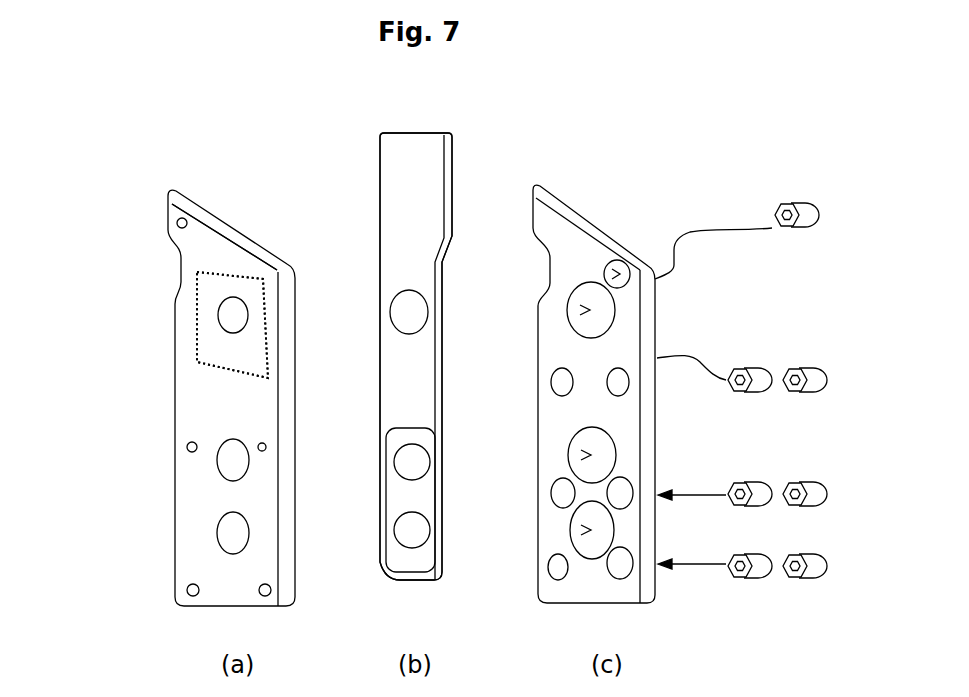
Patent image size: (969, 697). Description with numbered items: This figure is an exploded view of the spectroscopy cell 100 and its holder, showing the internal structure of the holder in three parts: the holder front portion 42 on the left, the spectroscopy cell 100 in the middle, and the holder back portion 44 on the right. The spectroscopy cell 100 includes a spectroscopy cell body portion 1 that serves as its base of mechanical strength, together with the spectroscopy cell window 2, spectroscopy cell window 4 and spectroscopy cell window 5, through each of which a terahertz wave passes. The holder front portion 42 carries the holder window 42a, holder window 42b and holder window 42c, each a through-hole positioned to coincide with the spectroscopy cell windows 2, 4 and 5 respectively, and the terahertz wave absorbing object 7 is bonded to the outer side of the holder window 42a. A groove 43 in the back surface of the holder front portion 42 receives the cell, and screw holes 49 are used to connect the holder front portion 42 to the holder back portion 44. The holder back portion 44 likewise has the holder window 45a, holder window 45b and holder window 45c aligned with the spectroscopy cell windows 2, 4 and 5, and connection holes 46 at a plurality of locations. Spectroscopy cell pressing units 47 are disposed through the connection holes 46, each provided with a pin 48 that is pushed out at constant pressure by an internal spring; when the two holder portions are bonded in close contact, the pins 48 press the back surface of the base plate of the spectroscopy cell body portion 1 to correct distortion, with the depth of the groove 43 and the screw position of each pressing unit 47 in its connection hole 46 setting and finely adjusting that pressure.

The spectroscopy cell 100 is at (443, 119).
The spectroscopy cell body portion 1 is at (390, 218).
The spectroscopy cell window 2 is at (380, 355).
The spectroscopy cell window 4 is at (400, 492).
The spectroscopy cell window 5 is at (394, 538).
The terahertz wave absorbing object 7 is at (242, 372).
The holder front portion 42 is at (163, 207).
The holder window 42a is at (228, 332).
The holder window 42b is at (221, 471).
The holder window 42c is at (220, 546).
The groove 43 is at (231, 213).
The holder back portion 44 is at (562, 192).
The holder window 45a is at (567, 311).
The holder window 45b is at (568, 458).
The holder window 45c is at (570, 533).
The connection hole 46 is at (622, 260).
The spectroscopy cell pressing unit 47 is at (805, 198).
The pin 48 is at (772, 212).
The screw hole 49 is at (187, 589).